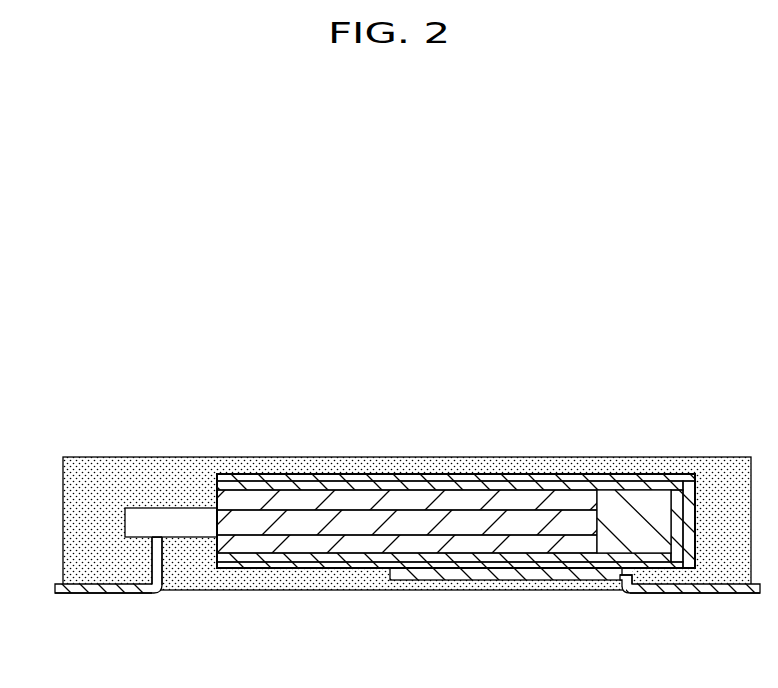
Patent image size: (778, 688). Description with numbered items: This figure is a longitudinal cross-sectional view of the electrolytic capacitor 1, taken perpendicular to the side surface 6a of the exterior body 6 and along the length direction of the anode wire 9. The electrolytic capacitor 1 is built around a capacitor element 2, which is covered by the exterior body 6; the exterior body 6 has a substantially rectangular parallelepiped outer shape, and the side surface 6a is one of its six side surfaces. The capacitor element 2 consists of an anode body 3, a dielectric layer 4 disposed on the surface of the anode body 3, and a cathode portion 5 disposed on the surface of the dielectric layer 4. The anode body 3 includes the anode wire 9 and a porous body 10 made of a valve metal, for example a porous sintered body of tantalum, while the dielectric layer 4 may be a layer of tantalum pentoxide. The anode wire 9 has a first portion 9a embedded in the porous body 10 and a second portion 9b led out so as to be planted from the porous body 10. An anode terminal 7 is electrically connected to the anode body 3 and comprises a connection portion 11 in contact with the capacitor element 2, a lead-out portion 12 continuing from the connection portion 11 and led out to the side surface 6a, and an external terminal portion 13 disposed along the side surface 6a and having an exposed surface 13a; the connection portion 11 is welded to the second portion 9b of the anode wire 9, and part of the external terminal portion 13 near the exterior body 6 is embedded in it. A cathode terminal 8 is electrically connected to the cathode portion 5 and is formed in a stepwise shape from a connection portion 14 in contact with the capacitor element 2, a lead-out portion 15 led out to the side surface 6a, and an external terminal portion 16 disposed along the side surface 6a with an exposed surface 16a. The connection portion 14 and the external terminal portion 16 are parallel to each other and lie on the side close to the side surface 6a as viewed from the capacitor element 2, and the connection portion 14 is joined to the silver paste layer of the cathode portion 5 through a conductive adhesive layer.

The electrolytic capacitor 1 is at (645, 403).
The capacitor element 2 is at (427, 435).
The anode body 3 is at (415, 445).
The dielectric layer 4 is at (395, 483).
The cathode portion 5 is at (425, 478).
The exterior body 6 is at (95, 466).
The side surface 6a is at (407, 596).
The anode terminal 7 is at (166, 565).
The cathode terminal 8 is at (465, 572).
The anode wire 9 is at (378, 461).
The first portion 9a is at (270, 520).
The second portion 9b is at (160, 537).
The porous body 10 is at (338, 490).
The connection portion 11 is at (157, 533).
The lead-out portion 12 is at (153, 555).
The external terminal portion 13 is at (92, 596).
The exposed surface 13a is at (112, 596).
The connection portion 14 is at (517, 572).
The lead-out portion 15 is at (622, 588).
The external terminal portion 16 is at (725, 597).
The exposed surface 16a is at (662, 599).